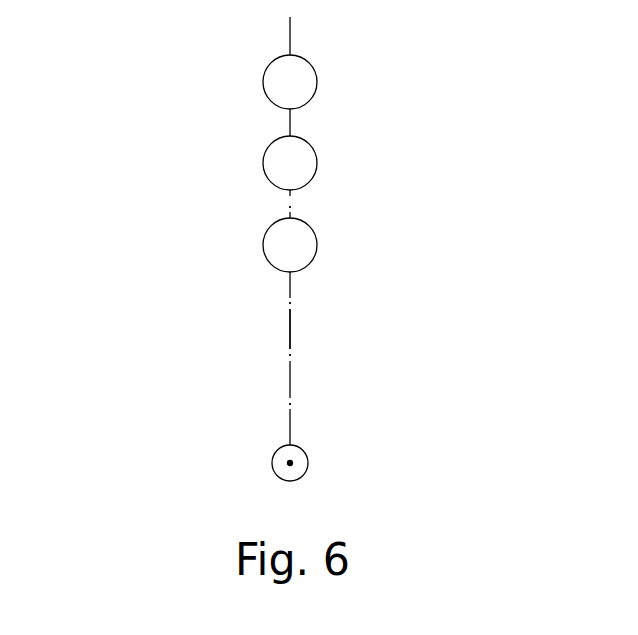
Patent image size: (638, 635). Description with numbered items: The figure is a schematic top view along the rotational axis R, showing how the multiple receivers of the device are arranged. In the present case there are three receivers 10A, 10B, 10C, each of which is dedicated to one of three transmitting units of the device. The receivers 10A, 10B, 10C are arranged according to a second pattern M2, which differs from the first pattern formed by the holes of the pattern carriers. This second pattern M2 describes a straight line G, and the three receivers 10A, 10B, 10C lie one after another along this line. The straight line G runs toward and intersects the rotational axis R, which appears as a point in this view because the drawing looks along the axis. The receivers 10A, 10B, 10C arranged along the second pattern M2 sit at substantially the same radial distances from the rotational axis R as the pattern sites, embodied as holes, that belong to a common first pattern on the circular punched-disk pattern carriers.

The receiver 10A is at (263, 78).
The receiver 10B is at (263, 159).
The receiver 10C is at (263, 242).
The second pattern M2 is at (313, 127).
The straight line G is at (290, 333).
The rotational axis R is at (290, 463).